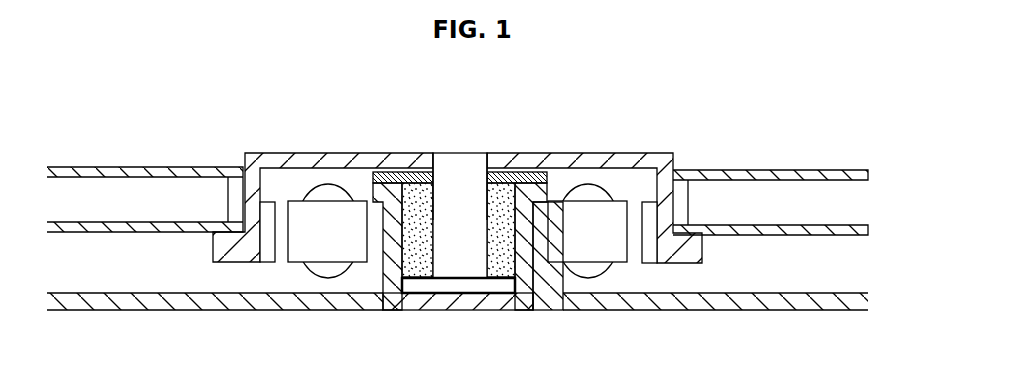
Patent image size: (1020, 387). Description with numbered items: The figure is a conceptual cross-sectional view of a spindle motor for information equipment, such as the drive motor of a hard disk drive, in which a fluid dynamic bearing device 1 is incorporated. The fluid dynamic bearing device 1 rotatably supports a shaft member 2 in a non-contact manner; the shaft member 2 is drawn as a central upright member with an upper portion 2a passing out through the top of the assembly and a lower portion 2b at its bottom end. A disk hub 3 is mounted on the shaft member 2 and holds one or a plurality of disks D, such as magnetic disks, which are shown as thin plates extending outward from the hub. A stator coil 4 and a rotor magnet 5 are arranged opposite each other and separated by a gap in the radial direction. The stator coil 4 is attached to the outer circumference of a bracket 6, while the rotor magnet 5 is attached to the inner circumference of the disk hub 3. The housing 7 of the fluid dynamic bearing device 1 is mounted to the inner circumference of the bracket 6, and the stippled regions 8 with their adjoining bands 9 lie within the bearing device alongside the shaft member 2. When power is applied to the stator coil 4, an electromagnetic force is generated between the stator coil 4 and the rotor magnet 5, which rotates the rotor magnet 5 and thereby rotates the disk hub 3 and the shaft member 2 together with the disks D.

The fluid dynamic bearing device 1 is at (425, 312).
The shaft member 2 is at (459, 183).
The shaft upper portion 2a is at (452, 173).
The shaft bottom flange 2b is at (465, 287).
The disk hub 3 is at (645, 163).
The stator coil 4 is at (620, 257).
The rotor magnet 5 is at (650, 252).
The bracket 6 is at (550, 300).
The housing 7 is at (493, 298).
The magnet 8 is at (503, 182).
The seal ring 9 is at (408, 182).
The disk D is at (772, 170).